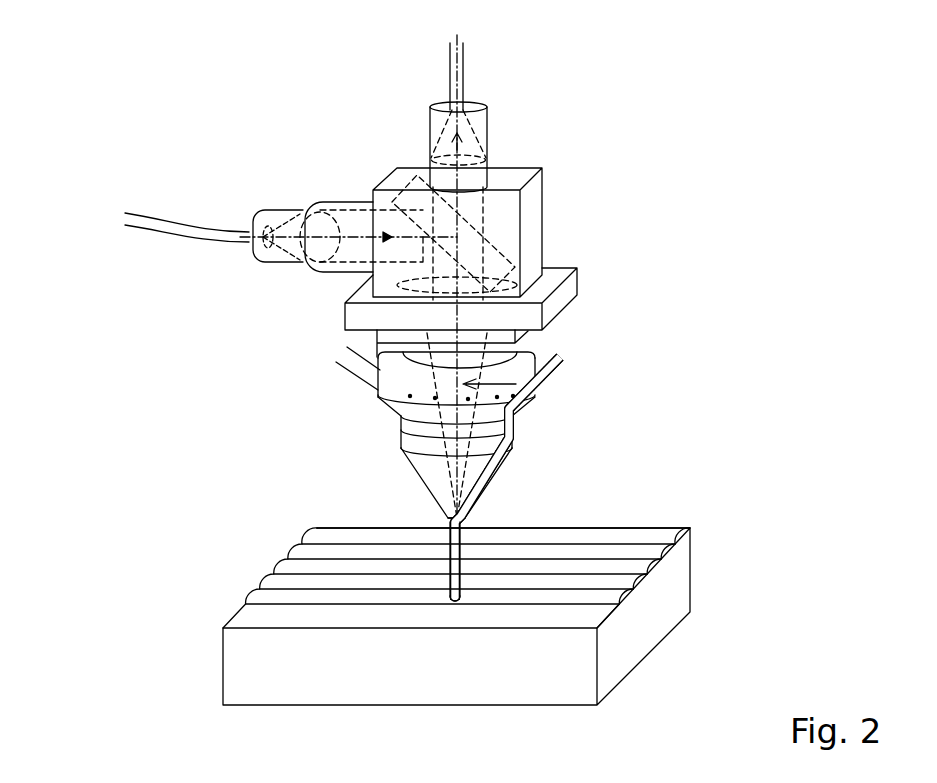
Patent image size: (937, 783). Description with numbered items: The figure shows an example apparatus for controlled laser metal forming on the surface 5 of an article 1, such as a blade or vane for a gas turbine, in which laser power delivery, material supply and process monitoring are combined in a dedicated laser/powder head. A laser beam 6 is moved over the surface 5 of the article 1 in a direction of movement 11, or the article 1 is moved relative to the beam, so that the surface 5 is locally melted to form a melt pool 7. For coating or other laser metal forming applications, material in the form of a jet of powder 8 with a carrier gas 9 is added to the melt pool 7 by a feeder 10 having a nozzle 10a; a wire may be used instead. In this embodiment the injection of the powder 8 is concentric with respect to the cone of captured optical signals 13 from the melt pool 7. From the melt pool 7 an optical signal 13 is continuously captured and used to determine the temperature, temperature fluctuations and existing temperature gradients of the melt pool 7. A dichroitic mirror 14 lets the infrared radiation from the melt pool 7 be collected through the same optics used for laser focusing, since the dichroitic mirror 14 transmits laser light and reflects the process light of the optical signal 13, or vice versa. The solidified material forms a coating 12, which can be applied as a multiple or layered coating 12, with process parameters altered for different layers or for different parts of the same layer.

The article 1 is at (322, 675).
The surface of article 5 is at (322, 615).
The laser beam 6 is at (290, 235).
The melt pool 7 is at (470, 598).
The powder 8 is at (460, 522).
The carrier gas 9 is at (460, 522).
The feeder 10 is at (563, 373).
The nozzle 10a is at (447, 521).
The direction of movement 11 is at (262, 362).
The coating 12 is at (607, 552).
The optical signal 13 is at (465, 135).
The dichroitic mirror 14 is at (493, 258).